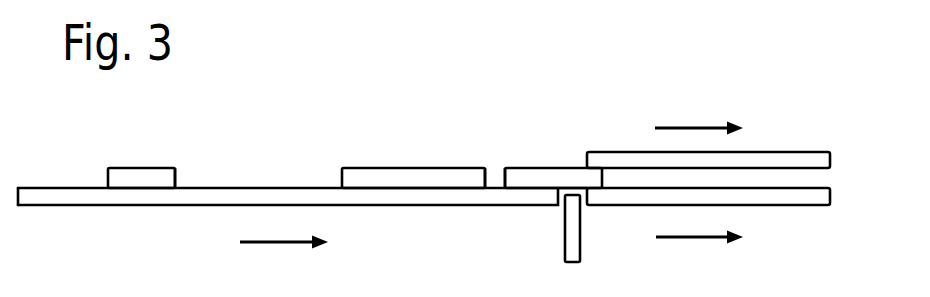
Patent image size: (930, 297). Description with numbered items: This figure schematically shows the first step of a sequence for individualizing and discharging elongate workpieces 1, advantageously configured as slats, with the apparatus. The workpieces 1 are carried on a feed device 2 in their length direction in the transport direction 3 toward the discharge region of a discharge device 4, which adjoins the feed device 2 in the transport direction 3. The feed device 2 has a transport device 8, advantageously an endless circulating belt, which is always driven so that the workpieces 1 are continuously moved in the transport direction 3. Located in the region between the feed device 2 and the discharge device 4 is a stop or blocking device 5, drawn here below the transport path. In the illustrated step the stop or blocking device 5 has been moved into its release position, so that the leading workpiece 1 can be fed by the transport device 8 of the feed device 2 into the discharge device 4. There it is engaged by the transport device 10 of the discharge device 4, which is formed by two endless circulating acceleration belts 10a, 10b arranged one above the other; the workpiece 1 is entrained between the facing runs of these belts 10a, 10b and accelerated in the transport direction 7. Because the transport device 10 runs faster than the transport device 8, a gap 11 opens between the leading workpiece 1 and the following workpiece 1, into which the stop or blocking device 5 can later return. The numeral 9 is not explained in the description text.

The workpiece 1 is at (127, 182).
The feed device 2 is at (227, 177).
The transport direction 3 is at (283, 245).
The discharge device 4 is at (782, 103).
The stop or blocking device 5 is at (572, 230).
The transport direction 7 is at (688, 255).
The transport device 8 is at (38, 197).
The side face of component 9 is at (180, 180).
The transport device 10 is at (708, 183).
The acceleration belt 10a is at (605, 152).
The acceleration belt 10b is at (773, 200).
The gap 11 is at (495, 180).